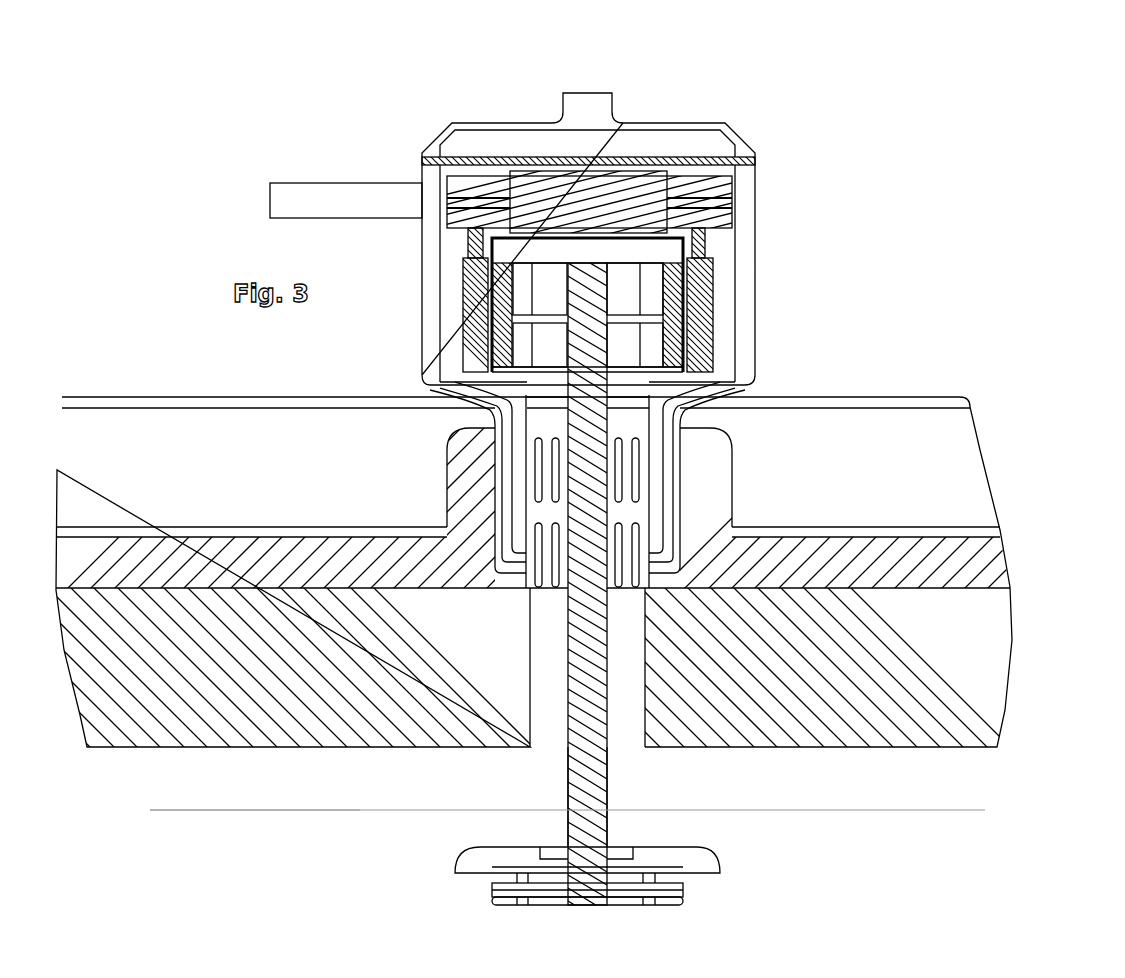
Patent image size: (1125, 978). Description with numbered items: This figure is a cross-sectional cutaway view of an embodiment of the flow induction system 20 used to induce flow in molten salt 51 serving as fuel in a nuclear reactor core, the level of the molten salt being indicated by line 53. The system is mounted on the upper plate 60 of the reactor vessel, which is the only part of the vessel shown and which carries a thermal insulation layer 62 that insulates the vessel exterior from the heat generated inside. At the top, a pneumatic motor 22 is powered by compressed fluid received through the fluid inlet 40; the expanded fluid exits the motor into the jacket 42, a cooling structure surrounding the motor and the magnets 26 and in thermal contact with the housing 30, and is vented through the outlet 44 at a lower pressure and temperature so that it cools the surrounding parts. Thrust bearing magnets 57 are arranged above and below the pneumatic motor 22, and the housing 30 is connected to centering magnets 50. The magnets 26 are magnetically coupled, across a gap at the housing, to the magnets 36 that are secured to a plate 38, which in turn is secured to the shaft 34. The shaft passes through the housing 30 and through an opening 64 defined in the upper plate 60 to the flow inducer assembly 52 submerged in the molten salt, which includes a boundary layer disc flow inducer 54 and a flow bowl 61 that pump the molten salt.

The flow induction system 20 is at (586, 300).
The pneumatic motor 22 is at (722, 192).
The magnets 26 is at (713, 291).
The housing 30 is at (652, 447).
The shaft 34 is at (635, 580).
The magnets 36 is at (624, 304).
The plate 38 is at (587, 305).
The fluid inlet 40 is at (283, 200).
The jacket 42 is at (747, 244).
The outlet 44 is at (600, 103).
The centering magnets 50 is at (548, 548).
The molten salt 51 is at (255, 847).
The flow inducer assembly 52 is at (622, 812).
The line 53 is at (355, 808).
The boundary layer disc flow inducer 54 is at (522, 890).
The thrust bearing magnets 57 is at (562, 233).
The upper plate 60 is at (562, 652).
The flow bowl 61 is at (700, 849).
The thermal insulation layer 62 is at (710, 488).
The opening 64 is at (553, 742).